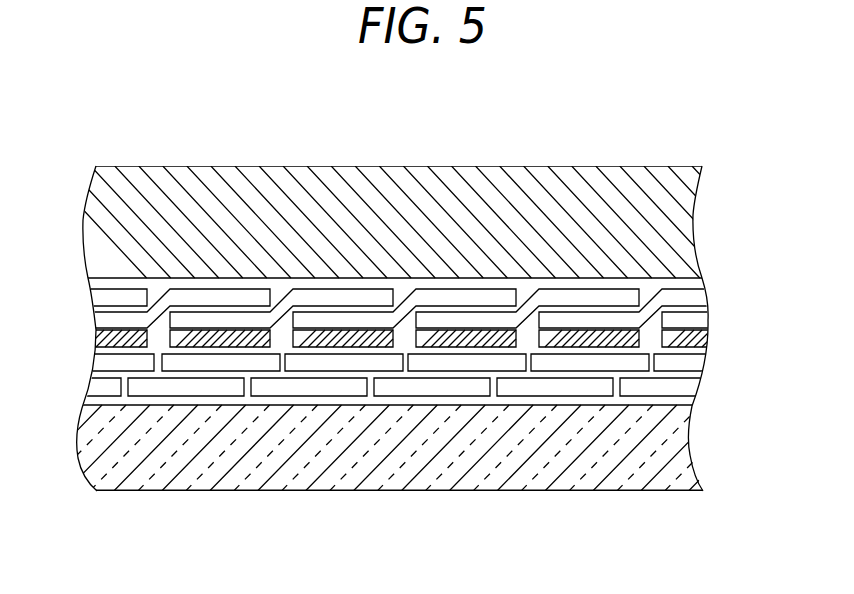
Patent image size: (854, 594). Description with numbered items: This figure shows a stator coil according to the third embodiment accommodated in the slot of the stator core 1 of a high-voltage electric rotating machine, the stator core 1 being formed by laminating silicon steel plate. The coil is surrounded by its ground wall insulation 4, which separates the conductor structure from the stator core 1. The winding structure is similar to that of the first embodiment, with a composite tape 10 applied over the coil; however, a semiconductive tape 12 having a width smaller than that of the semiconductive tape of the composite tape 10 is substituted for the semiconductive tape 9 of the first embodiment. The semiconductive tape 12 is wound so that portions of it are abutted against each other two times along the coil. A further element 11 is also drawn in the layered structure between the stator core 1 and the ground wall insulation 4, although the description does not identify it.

The stator core 1 is at (444, 172).
The ground wall insulation 4 is at (598, 473).
The semiconductive tape 9 is at (218, 293).
The composite tape 10 is at (427, 331).
The insulating member 11 is at (355, 340).
The semiconductive tape 12 is at (727, 352).